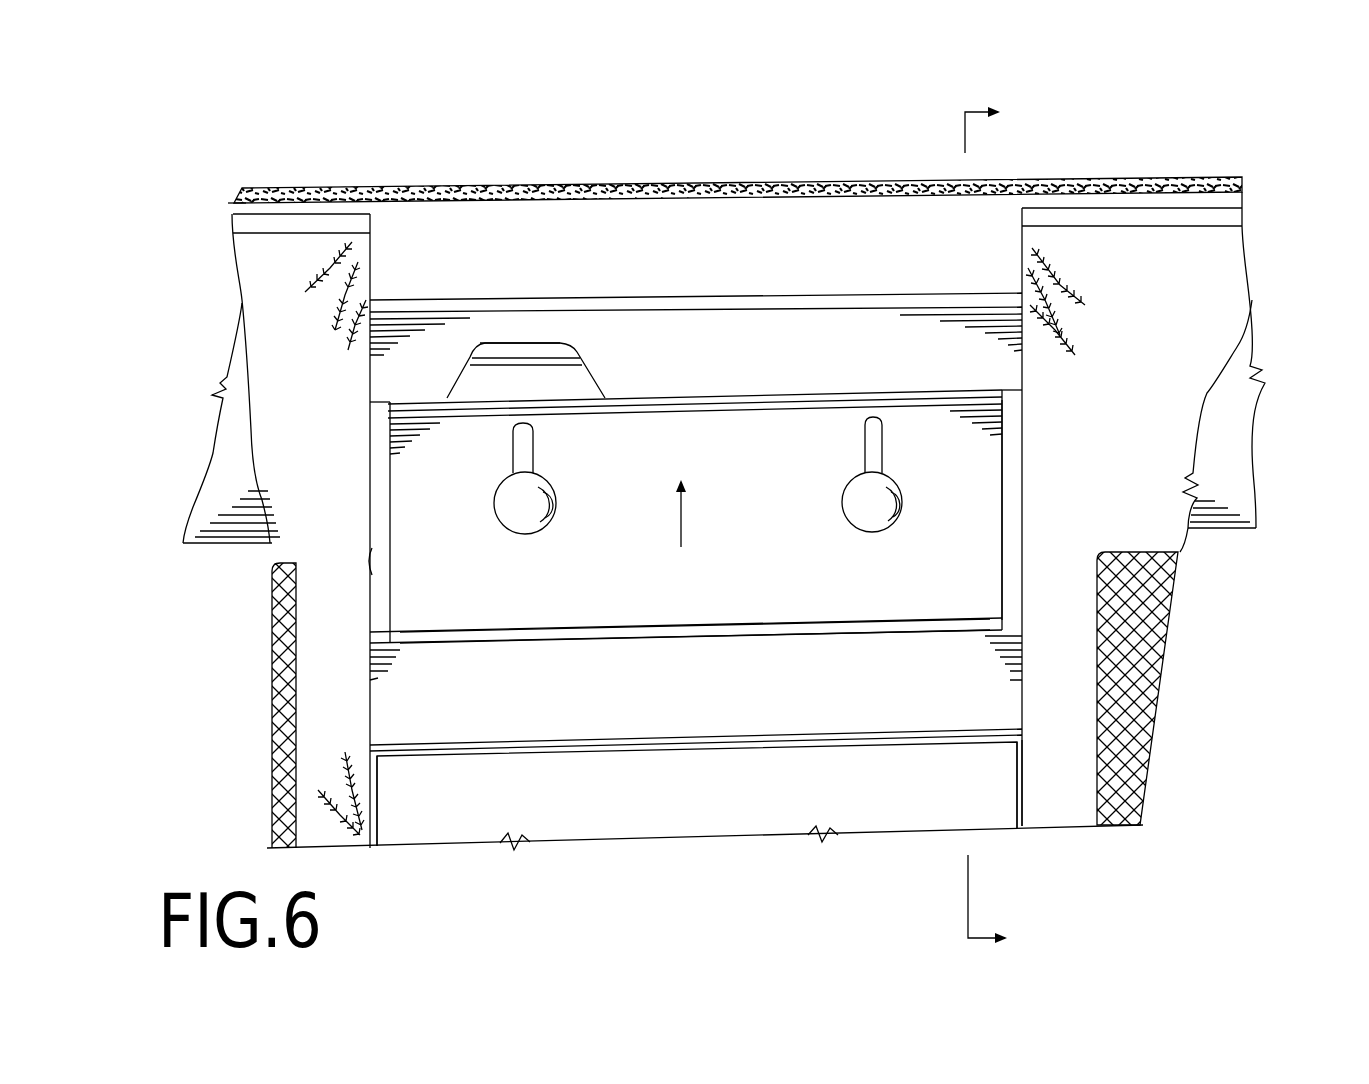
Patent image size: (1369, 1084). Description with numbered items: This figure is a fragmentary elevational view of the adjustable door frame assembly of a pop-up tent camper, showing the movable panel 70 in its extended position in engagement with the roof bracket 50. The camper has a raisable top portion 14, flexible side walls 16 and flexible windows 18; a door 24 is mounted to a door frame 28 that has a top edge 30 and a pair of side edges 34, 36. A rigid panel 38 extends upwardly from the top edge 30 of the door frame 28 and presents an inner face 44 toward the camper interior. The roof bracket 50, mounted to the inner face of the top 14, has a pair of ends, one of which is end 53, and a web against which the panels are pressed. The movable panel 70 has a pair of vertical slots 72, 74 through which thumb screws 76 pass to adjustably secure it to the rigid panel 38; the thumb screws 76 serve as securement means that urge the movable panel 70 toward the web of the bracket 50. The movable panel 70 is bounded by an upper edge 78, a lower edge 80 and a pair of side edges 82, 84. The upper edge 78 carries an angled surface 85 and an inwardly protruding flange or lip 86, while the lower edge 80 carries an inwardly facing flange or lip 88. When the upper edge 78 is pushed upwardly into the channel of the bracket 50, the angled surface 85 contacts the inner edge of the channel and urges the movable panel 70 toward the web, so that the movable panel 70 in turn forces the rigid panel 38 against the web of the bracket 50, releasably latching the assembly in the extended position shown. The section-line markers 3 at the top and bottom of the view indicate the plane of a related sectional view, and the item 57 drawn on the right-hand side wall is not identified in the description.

The section line 3- 3 is at (1020, 524).
The top portion 14 is at (325, 188).
The flexible side walls 16 is at (290, 530).
The flexible windows 18 is at (272, 640).
The door 24 is at (640, 803).
The door frame 28 is at (1035, 757).
The top edge 30 is at (720, 735).
The side edge 34 is at (1027, 790).
The side edge 36 is at (372, 790).
The rigid panel 38 is at (458, 700).
The inner face 44 is at (790, 500).
The roof bracket 50 is at (744, 294).
The end 53 is at (370, 360).
The right side wall 57 is at (1022, 355).
The movable panel 70 is at (1013, 473).
The vertical slot 72 is at (885, 440).
The vertical slot 74 is at (535, 446).
The thumb screws 76 is at (548, 530).
The upper edge 78 is at (512, 340).
The lower edge 80 is at (605, 640).
The side edge 82 is at (1005, 520).
The side edge 84 is at (390, 528).
The angled surface 85 is at (533, 387).
The inwardly protruding flange or lip 86 is at (662, 404).
The inwardly facing flange or lip 88 is at (632, 633).